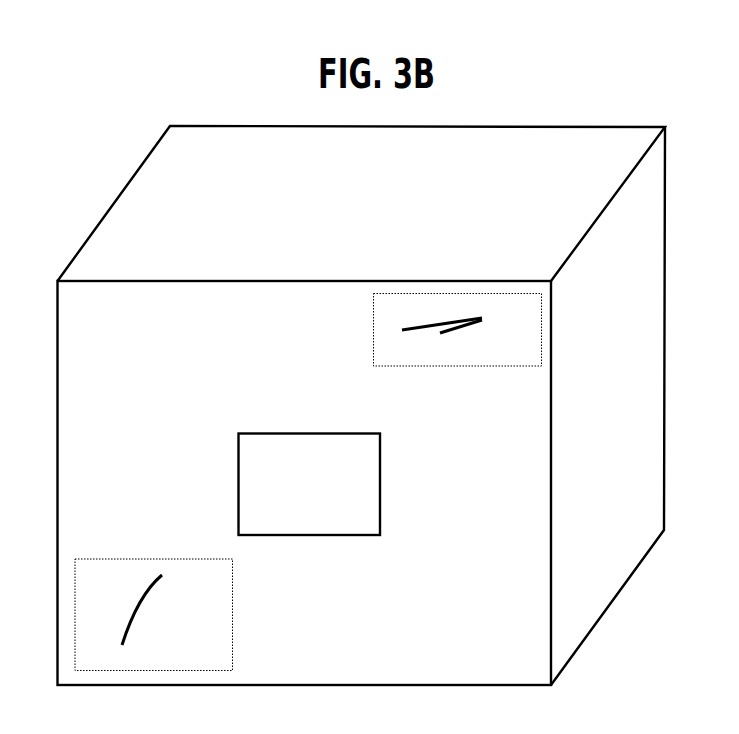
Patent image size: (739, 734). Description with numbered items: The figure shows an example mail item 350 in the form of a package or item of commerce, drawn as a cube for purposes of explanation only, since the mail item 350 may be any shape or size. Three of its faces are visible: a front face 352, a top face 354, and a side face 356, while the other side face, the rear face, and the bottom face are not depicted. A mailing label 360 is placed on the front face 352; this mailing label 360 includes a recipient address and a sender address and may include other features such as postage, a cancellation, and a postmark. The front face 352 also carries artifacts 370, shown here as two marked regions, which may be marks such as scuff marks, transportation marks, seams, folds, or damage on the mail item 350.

The mail item 350 is at (120, 75).
The front face 352 is at (342, 326).
The top face 354 is at (387, 204).
The side face 356 is at (627, 410).
The mailing label 360 is at (363, 513).
The artifacts 370 is at (537, 348).